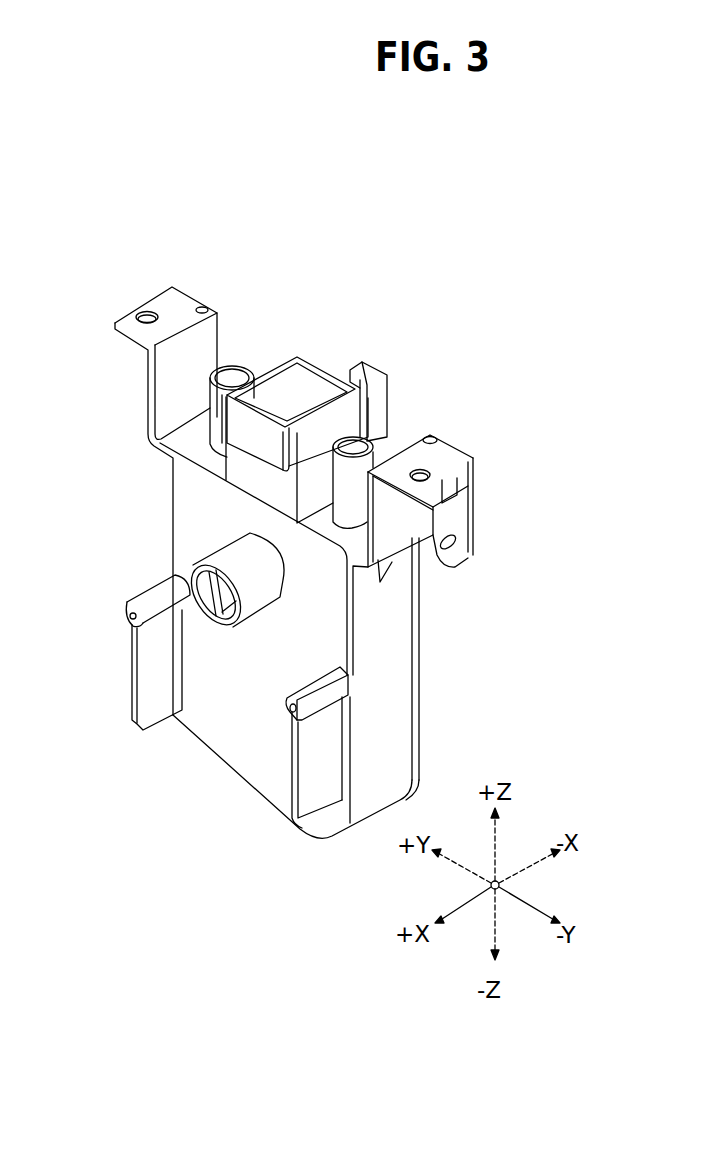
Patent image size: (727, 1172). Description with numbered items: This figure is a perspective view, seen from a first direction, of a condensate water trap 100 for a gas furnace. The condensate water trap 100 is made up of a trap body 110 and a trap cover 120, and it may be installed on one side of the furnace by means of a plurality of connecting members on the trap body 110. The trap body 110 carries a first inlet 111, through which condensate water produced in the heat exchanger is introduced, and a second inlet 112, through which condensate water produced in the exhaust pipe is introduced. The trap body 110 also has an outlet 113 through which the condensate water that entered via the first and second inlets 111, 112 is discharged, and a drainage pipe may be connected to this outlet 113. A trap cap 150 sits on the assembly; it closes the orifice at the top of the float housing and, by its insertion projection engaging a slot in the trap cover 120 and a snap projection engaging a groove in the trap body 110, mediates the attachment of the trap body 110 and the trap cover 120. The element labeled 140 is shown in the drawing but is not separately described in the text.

The condensate water trap 100 is at (113, 224).
The trap body 110 is at (237, 748).
The first inlet 111 is at (226, 372).
The second inlet 112 is at (383, 430).
The outlet 113 is at (240, 567).
The trap cover 120 is at (421, 704).
The mounting bracket 140 is at (383, 368).
The trap cap 150 is at (297, 392).